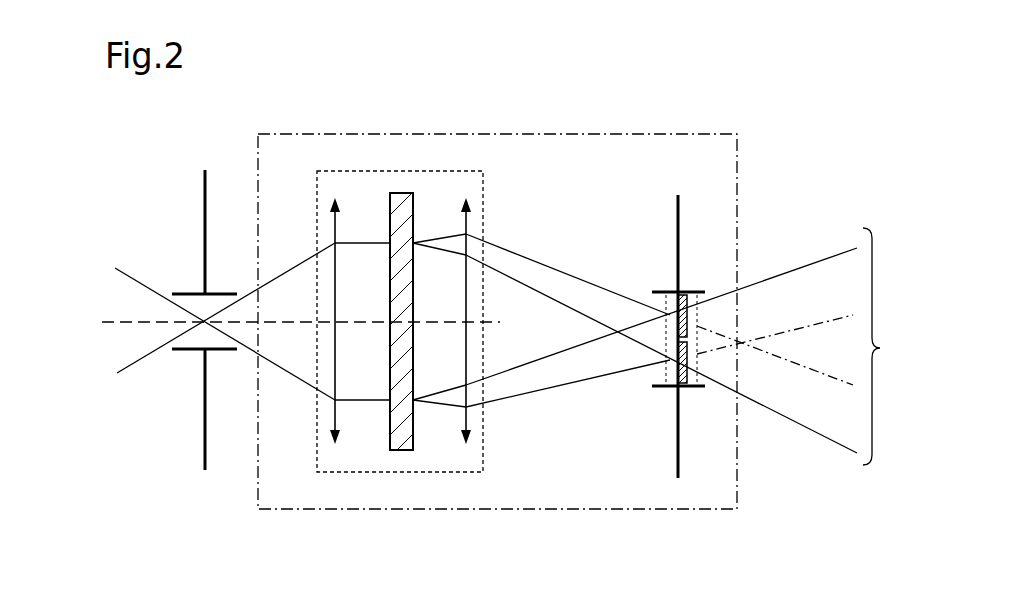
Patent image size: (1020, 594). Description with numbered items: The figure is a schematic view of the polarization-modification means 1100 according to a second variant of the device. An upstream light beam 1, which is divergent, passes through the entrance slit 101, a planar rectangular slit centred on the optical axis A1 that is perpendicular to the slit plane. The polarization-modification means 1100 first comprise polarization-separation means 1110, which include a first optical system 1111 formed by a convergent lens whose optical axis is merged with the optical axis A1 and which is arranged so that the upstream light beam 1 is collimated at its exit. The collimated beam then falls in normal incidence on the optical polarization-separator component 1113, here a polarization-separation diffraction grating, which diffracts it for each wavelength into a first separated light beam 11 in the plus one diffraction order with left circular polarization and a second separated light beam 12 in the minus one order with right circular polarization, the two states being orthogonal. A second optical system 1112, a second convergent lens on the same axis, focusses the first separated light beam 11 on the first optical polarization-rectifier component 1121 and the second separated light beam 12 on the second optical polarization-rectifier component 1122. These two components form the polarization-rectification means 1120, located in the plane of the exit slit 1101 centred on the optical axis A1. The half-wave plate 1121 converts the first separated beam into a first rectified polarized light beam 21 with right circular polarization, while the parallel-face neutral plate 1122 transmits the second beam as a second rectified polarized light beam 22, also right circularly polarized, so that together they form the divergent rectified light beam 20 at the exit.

The optical axis A1 is at (110, 320).
The entrance slit 101 is at (205, 410).
The upstream light beam 1 is at (283, 347).
The polarization-modification means 1100 is at (653, 126).
The polarization-separation means 1110 is at (492, 182).
The first optical system 1111 is at (332, 222).
The second optical system 1112 is at (470, 414).
The optical polarization-separator component 1113 is at (395, 452).
The first separated light beam 11 is at (518, 367).
The second separated light beam 12 is at (558, 303).
The first rectified polarized light beam 21 is at (728, 323).
The second rectified polarized light beam 22 is at (720, 365).
The exit slit 1101 is at (680, 448).
The first optical polarization-rectifier component 1121 is at (655, 291).
The second optical polarization-rectifier component 1122 is at (658, 386).
The polarization-rectification means 1120 is at (708, 310).
The rectified light beam 20 is at (888, 346).